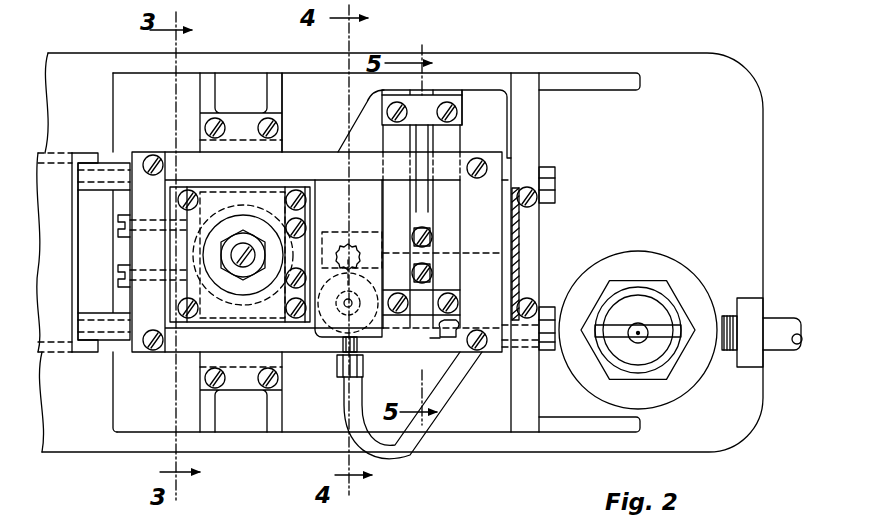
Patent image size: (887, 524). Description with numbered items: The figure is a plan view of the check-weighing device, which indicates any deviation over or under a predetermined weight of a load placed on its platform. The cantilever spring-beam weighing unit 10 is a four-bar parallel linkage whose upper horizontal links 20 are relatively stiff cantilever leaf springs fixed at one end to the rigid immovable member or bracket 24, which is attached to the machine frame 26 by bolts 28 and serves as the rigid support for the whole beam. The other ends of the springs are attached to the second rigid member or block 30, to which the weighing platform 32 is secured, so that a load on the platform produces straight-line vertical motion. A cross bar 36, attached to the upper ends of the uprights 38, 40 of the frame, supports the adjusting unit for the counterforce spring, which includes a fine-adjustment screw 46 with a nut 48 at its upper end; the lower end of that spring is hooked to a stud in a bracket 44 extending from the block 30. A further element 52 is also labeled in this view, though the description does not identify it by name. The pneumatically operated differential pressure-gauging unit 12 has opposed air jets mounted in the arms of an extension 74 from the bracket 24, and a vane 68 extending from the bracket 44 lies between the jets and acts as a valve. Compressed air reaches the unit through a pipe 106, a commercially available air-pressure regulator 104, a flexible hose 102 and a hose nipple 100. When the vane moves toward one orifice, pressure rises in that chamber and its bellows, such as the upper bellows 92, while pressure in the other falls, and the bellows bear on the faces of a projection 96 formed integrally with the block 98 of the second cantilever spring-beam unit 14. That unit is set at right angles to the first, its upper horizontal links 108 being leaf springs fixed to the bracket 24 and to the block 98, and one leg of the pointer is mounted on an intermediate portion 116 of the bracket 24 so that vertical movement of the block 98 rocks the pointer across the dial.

The cantilever spring-beam weighing unit 10 is at (126, 356).
The pneumatically operated differential pressure-gauging unit 12 is at (360, 228).
The second cantilever spring-beam unit 14 is at (434, 346).
The upper horizontal links 20 is at (303, 155).
The rigid immovable member or bracket 24 is at (482, 95).
The machine frame 26 is at (137, 452).
The bolts 28 is at (556, 182).
The second rigid member or block 30 is at (135, 158).
The weighing platform 32 is at (60, 152).
The cross bar 36 is at (200, 143).
The upright 38 is at (280, 95).
The upright 40 is at (298, 432).
The bracket 44 is at (176, 294).
The fine-adjustment screw 46 is at (239, 242).
The nut 48 is at (200, 295).
The pin 52 is at (205, 235).
The vane 68 is at (314, 232).
The extension 74 is at (362, 117).
The upper bellows 92 is at (541, 137).
The projection 96 is at (312, 340).
The block 98 is at (421, 336).
The hose nipple 100 is at (363, 366).
The flexible hose 102 is at (402, 460).
The air-pressure regulator 104 is at (661, 266).
The pipe 106 is at (776, 326).
The upper horizontal links 108 is at (448, 92).
The intermediate portion 116 is at (428, 212).